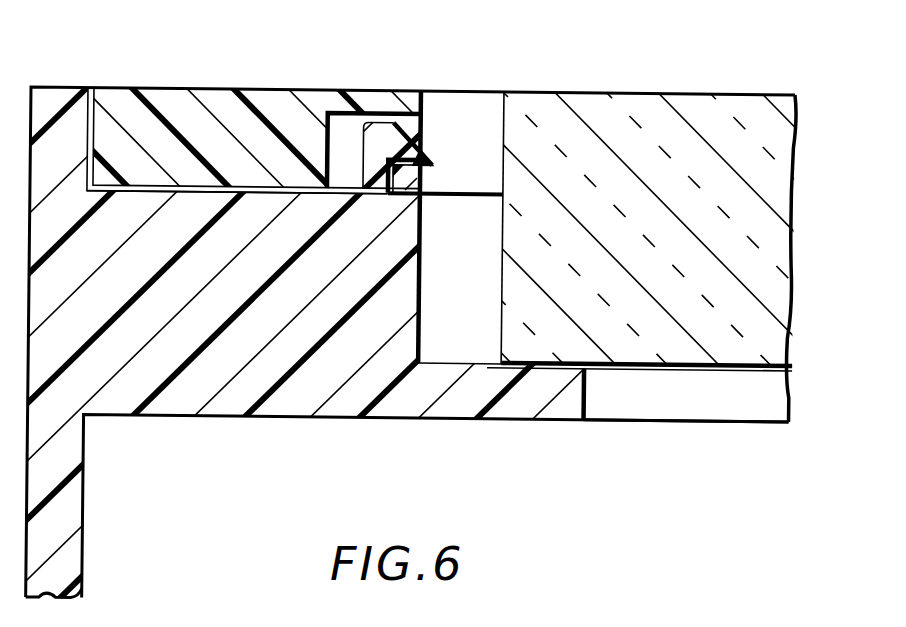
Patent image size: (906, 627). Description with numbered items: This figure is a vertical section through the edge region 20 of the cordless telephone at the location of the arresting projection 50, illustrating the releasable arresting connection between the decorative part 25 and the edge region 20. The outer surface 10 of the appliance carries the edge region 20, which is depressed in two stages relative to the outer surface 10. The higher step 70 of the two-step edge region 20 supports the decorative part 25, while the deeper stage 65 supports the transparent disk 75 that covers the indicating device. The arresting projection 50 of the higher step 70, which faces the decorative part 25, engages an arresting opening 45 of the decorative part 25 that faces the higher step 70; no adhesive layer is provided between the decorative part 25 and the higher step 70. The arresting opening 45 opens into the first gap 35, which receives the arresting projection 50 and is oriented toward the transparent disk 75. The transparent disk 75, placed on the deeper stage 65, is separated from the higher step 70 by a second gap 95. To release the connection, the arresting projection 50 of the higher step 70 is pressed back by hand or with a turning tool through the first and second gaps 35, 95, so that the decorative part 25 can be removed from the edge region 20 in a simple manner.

The outer surface 10 is at (64, 86).
The edge region 20 is at (361, 422).
The decorative part 25 is at (263, 103).
The first gap 35 is at (415, 127).
The arresting opening 45 is at (347, 135).
The arresting projection 50 is at (419, 152).
The deeper stage 65 is at (568, 408).
The higher step 70 is at (182, 192).
The transparent disk 75 is at (727, 113).
The second gap 95 is at (466, 350).